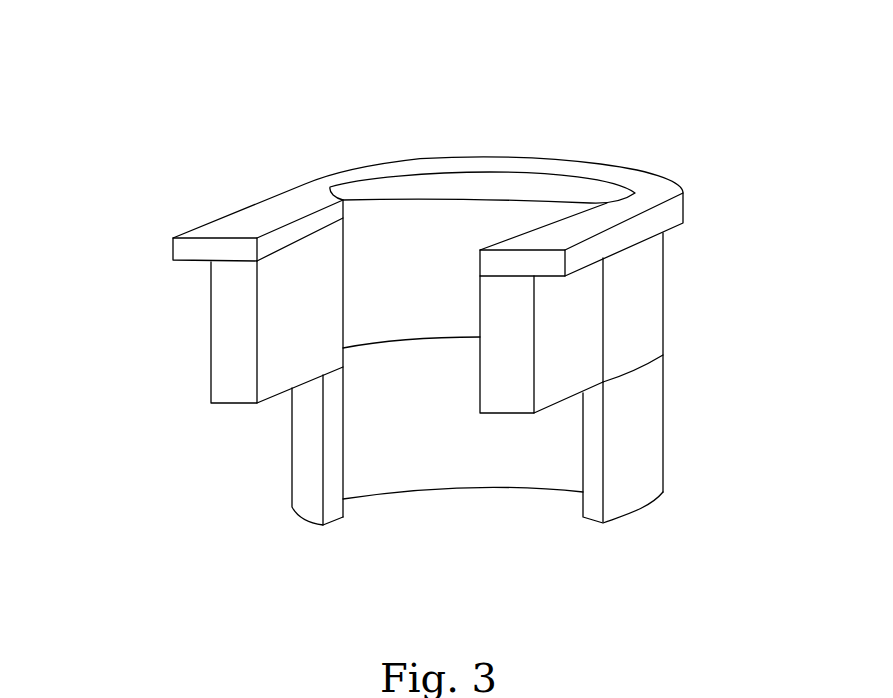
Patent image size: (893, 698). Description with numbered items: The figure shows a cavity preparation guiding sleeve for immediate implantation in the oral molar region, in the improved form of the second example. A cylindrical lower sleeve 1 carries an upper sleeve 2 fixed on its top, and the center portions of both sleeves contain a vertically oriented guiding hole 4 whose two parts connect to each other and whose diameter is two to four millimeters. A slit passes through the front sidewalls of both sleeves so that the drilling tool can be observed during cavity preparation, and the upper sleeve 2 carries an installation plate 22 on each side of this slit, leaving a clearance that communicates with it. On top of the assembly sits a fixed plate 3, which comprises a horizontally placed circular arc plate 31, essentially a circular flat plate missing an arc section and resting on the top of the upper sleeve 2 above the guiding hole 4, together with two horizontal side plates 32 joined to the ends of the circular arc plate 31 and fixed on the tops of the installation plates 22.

The lower sleeve 1 is at (519, 498).
The upper sleeve 2 is at (423, 361).
The installation plates 22 is at (233, 343).
The fixed plate 3 is at (380, 140).
The circular arc plate 31 is at (323, 182).
The side plates 32 is at (244, 203).
The guiding hole 4 is at (445, 502).